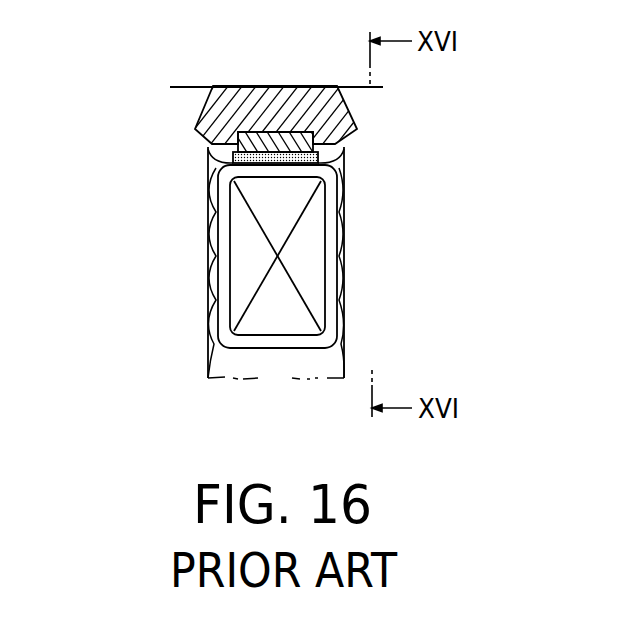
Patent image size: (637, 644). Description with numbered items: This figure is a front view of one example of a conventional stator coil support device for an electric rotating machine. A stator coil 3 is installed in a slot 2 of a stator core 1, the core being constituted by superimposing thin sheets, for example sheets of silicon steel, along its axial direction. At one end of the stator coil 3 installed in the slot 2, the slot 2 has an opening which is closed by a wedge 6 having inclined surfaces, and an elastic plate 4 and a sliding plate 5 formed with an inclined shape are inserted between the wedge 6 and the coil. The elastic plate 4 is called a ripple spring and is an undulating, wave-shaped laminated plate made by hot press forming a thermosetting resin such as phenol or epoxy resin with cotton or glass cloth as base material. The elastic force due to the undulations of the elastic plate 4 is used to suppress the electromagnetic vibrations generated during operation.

The stator core 1 is at (185, 208).
The slot 2 is at (207, 243).
The stator coil 3 is at (240, 287).
The elastic plate 4 is at (233, 160).
The sliding plate 5 is at (238, 141).
The wedge 6 is at (217, 108).